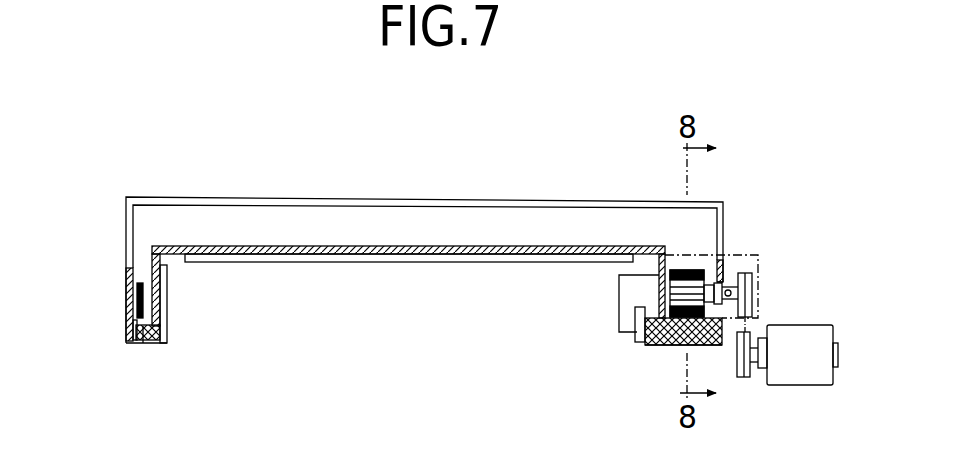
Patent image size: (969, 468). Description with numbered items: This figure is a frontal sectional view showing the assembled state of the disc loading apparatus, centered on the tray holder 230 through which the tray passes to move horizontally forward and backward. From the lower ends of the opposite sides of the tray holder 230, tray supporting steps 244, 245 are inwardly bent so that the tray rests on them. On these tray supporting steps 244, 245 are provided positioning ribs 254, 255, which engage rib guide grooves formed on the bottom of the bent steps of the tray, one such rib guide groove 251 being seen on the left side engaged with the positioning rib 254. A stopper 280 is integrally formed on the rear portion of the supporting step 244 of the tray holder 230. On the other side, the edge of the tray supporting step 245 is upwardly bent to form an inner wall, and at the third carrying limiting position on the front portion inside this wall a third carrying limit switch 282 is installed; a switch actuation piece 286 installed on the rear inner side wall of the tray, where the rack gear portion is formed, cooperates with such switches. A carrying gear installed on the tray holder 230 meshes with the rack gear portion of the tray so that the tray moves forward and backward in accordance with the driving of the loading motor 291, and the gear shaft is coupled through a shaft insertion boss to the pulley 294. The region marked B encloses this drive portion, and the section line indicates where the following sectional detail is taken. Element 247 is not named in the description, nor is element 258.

The tray holder 230 is at (224, 186).
The tray supporting step 244 is at (160, 343).
The tray supporting step 245 is at (698, 342).
The roller 247 is at (163, 330).
The rib guide groove 251 is at (130, 330).
The positioning rib 254 is at (143, 345).
The positioning rib 255 is at (675, 342).
The rack member 258 is at (140, 292).
The stopper 280 is at (165, 285).
The third carrying limit switch 282 is at (638, 339).
The switch actuation piece 286 is at (625, 290).
The loading motor 291 is at (818, 335).
The pulley 294 is at (752, 293).
The drive section B is at (733, 257).